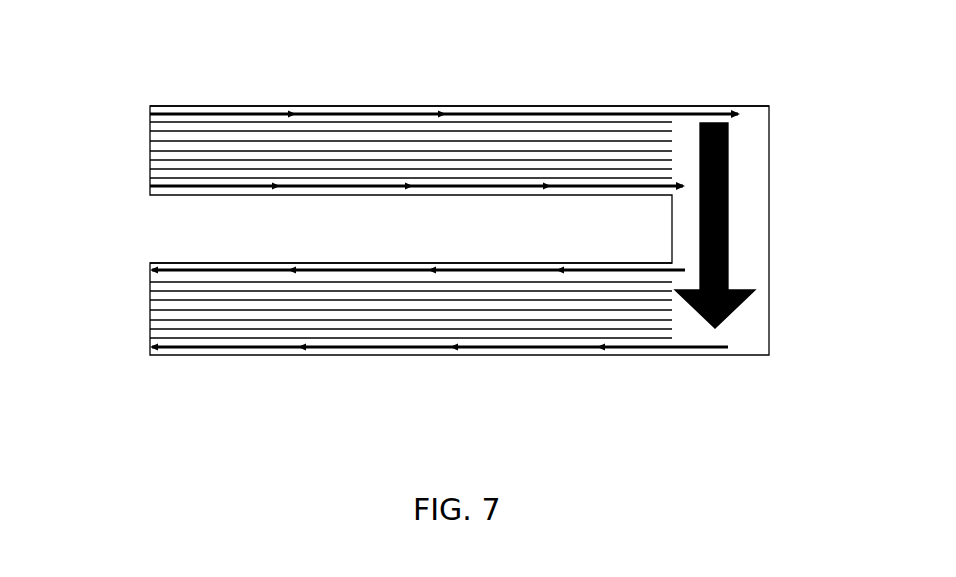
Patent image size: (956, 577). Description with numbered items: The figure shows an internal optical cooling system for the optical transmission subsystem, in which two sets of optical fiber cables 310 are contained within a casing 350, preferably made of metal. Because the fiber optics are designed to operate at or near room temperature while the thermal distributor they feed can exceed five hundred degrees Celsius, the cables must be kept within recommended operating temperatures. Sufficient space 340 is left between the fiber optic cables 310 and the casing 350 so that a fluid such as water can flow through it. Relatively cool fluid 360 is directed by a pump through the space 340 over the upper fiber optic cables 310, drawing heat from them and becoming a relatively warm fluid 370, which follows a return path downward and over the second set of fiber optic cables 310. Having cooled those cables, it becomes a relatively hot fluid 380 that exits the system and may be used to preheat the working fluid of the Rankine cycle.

The optical fiber cable 310 is at (148, 153).
The space 340 is at (640, 117).
The casing 350 is at (167, 103).
The relatively cool fluid 360 is at (223, 190).
The relatively warm fluid 370 is at (732, 196).
The relatively hot fluid 380 is at (182, 354).